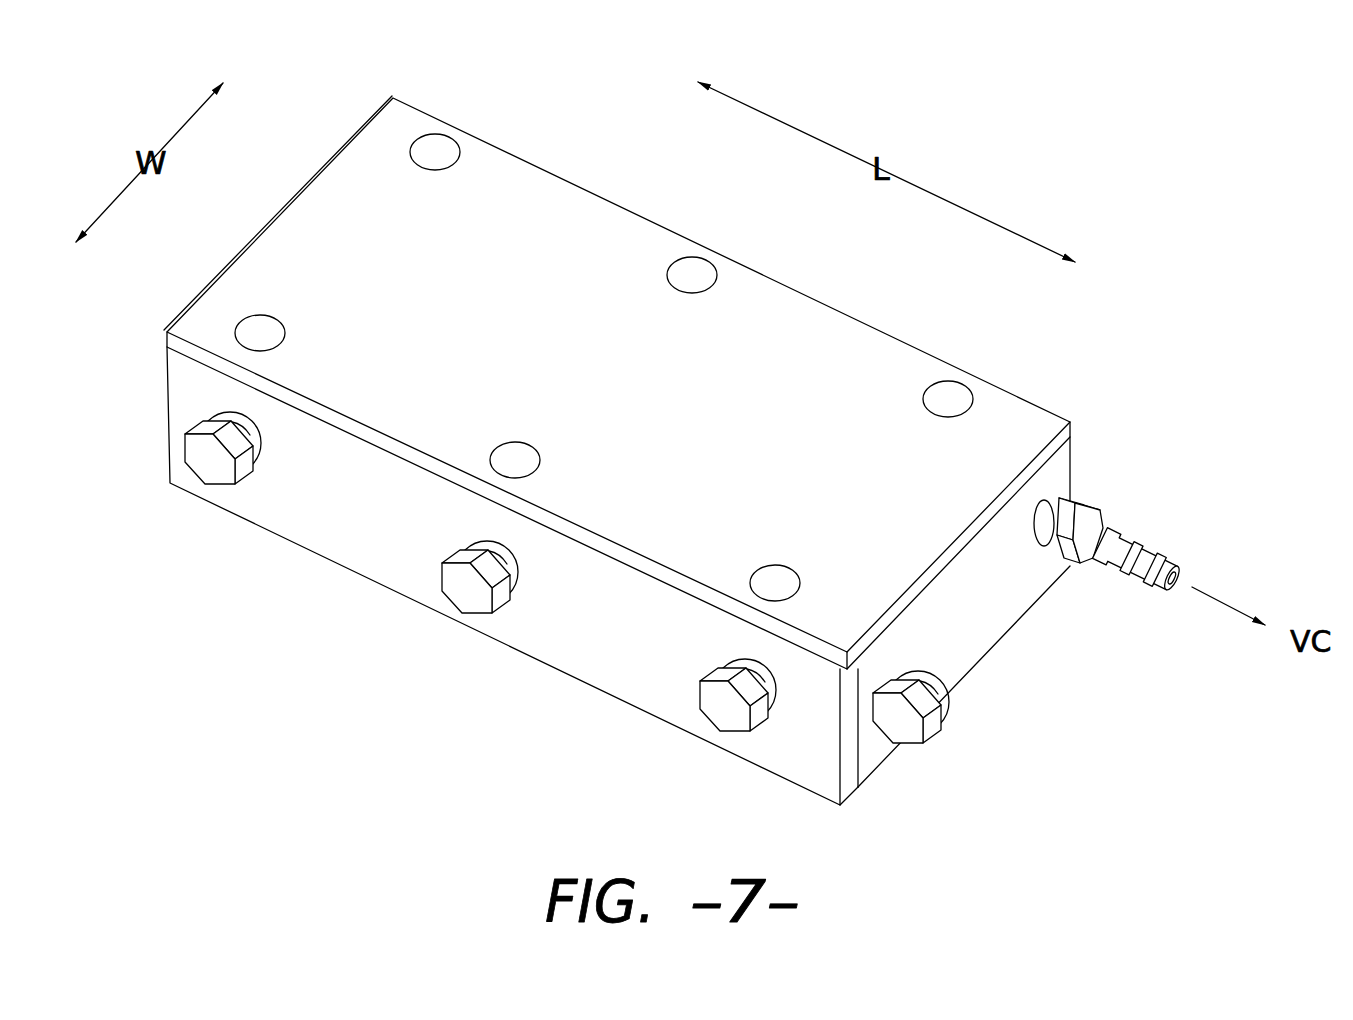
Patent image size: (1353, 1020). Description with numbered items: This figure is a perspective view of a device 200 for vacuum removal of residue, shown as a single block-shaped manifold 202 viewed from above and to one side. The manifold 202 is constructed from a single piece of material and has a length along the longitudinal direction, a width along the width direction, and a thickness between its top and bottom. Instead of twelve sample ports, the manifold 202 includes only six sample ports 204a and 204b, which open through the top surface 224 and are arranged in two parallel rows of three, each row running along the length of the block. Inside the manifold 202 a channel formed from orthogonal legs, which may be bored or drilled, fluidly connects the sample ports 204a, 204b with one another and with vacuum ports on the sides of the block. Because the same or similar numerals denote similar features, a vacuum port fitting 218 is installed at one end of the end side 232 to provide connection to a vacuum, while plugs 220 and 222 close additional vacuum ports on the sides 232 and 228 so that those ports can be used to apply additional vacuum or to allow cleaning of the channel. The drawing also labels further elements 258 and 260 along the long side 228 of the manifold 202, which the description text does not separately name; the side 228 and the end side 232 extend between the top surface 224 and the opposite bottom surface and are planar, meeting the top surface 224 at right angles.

The device 200 is at (660, 447).
The manifold 202 is at (365, 178).
The sample ports 204a is at (435, 140).
The sample ports 204b is at (260, 322).
The hose fitting 218 is at (1075, 500).
The plug 220 is at (908, 725).
The plug 222 is at (722, 713).
The top surface 224 is at (315, 232).
The first side wall 228 is at (182, 392).
The second side wall 232 is at (980, 610).
The plug 258 is at (463, 592).
The plug 260 is at (207, 472).